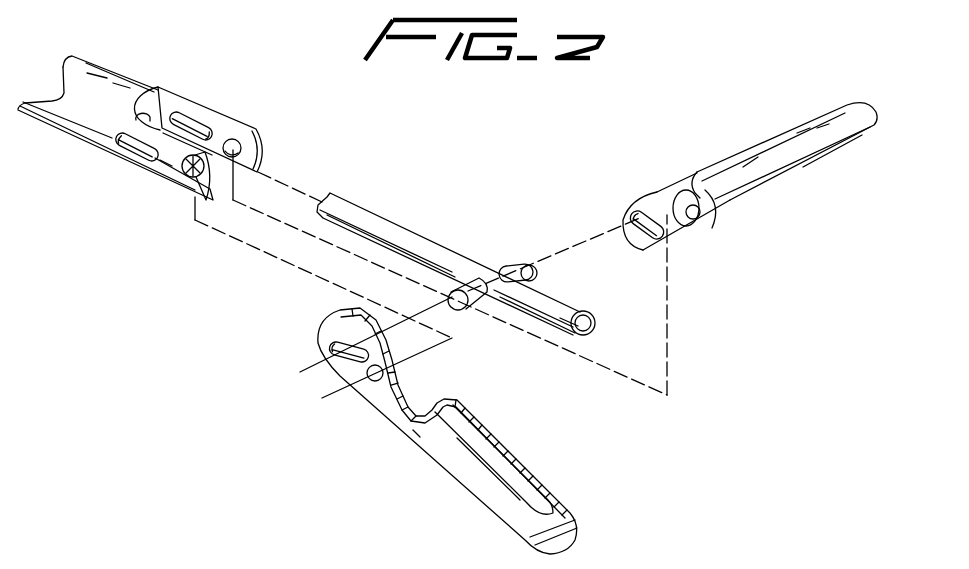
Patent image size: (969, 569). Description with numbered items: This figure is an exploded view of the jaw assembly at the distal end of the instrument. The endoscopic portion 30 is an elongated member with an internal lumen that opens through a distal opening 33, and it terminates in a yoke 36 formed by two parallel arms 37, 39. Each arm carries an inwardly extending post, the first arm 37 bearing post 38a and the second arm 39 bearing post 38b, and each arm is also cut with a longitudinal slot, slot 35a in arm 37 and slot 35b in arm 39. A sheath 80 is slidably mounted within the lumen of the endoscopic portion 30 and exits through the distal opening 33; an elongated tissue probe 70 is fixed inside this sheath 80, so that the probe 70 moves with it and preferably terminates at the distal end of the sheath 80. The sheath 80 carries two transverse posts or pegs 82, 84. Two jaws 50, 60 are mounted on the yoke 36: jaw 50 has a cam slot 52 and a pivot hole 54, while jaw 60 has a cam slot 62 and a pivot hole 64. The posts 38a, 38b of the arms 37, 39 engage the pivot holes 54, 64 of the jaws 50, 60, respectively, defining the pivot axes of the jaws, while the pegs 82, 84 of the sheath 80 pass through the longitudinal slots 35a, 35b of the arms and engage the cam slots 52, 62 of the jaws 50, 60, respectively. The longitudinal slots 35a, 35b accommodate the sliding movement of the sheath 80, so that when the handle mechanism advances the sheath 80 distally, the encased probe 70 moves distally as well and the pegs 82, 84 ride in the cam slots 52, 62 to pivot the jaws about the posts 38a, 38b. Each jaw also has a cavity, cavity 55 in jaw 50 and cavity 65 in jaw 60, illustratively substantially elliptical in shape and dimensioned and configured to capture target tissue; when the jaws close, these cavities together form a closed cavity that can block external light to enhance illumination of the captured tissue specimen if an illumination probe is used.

The endoscopic portion 30 is at (88, 72).
The distal opening 33 is at (160, 90).
The longitudinal slot 35a is at (188, 116).
The longitudinal slot 35b is at (120, 150).
The yoke 36 is at (239, 102).
The arm 37 is at (227, 127).
The post 38a is at (241, 149).
The post 38b is at (192, 160).
The arm 39 is at (175, 160).
The jaw 50 is at (736, 181).
The cam slot 52 is at (660, 213).
The pivot hole 54 is at (703, 223).
The cavity 55 is at (803, 167).
The jaw 60 is at (413, 431).
The cam slot 62 is at (330, 340).
The pivot hole 64 is at (373, 382).
The cavity 65 is at (505, 477).
The tissue probe 70 is at (590, 335).
The sheath 80 is at (357, 212).
The post 82 is at (521, 266).
The post 84 is at (480, 308).